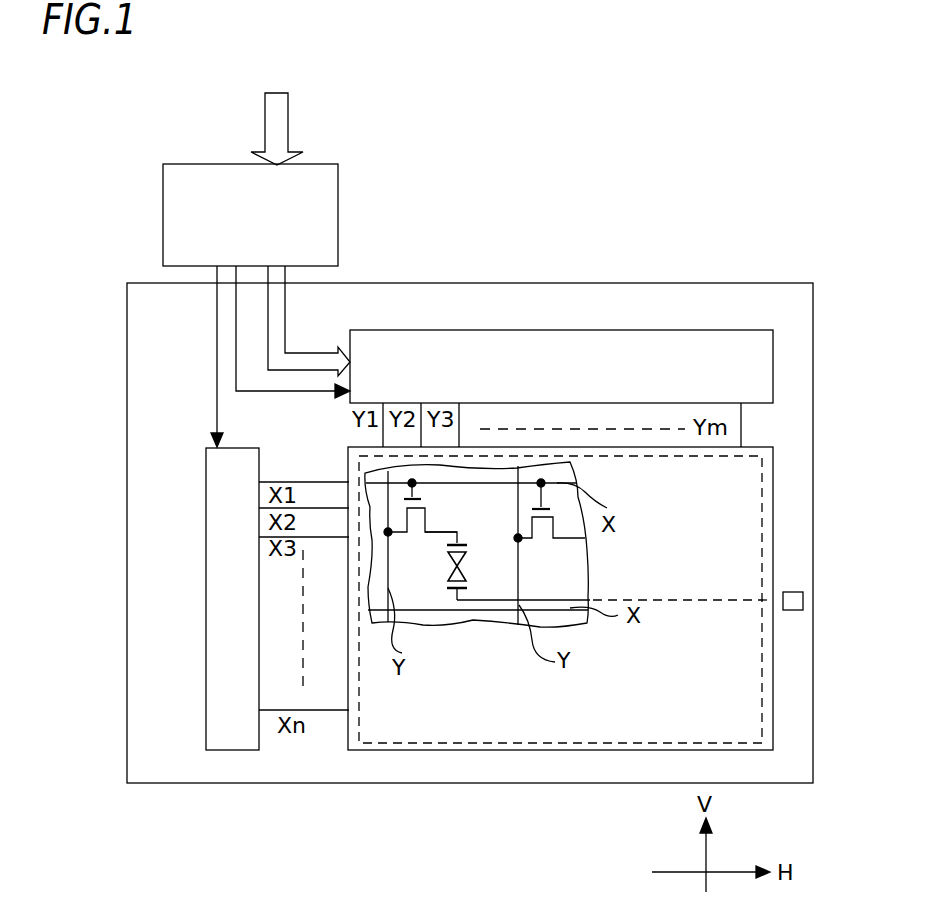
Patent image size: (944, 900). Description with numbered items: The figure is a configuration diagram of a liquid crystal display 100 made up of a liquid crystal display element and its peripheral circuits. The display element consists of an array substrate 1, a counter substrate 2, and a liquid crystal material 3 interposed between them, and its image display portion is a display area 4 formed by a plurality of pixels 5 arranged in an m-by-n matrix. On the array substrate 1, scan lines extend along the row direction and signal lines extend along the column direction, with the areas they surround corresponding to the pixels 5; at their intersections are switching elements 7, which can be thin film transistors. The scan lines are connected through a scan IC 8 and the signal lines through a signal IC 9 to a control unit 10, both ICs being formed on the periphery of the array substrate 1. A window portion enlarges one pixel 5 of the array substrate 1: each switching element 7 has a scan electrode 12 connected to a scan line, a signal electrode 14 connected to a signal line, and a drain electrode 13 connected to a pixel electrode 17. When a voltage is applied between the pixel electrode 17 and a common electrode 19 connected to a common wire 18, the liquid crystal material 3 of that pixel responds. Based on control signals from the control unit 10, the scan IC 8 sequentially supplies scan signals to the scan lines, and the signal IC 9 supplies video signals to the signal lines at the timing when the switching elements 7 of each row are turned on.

The liquid crystal display 100 is at (652, 212).
The array substrate 1 is at (777, 768).
The counter substrate 2 is at (773, 561).
The liquid crystal material 3 is at (462, 573).
The display area 4 is at (523, 747).
The pixel 5 is at (418, 600).
The switching element 7 is at (427, 505).
The scan IC 8 is at (206, 563).
The signal IC 9 is at (697, 350).
The control unit 10 is at (183, 164).
The scan electrode 12 is at (415, 494).
The drain electrode 13 is at (433, 532).
The signal electrode 14 is at (393, 534).
The pixel electrode 17 is at (468, 546).
The common wire 18 is at (793, 610).
The common electrode 19 is at (457, 622).